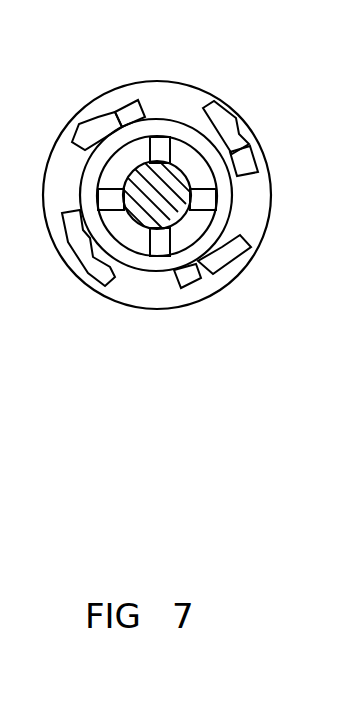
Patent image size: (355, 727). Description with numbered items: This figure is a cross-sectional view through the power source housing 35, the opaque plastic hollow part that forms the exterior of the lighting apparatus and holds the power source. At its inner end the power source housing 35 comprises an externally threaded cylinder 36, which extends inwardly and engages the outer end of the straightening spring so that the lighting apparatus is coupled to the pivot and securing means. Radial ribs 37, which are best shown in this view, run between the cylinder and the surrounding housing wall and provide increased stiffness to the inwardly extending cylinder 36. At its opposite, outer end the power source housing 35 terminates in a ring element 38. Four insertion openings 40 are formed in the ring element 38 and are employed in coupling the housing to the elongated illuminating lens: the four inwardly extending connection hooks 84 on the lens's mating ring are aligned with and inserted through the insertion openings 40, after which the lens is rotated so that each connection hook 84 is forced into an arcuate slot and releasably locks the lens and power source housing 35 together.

The power source housing 35 is at (84, 89).
The externally threaded cylinder 36 is at (183, 220).
The radial ribs 37 is at (160, 152).
The ring element 38 is at (130, 290).
The insertion openings 40 is at (218, 123).
The connection hooks 84 is at (132, 111).